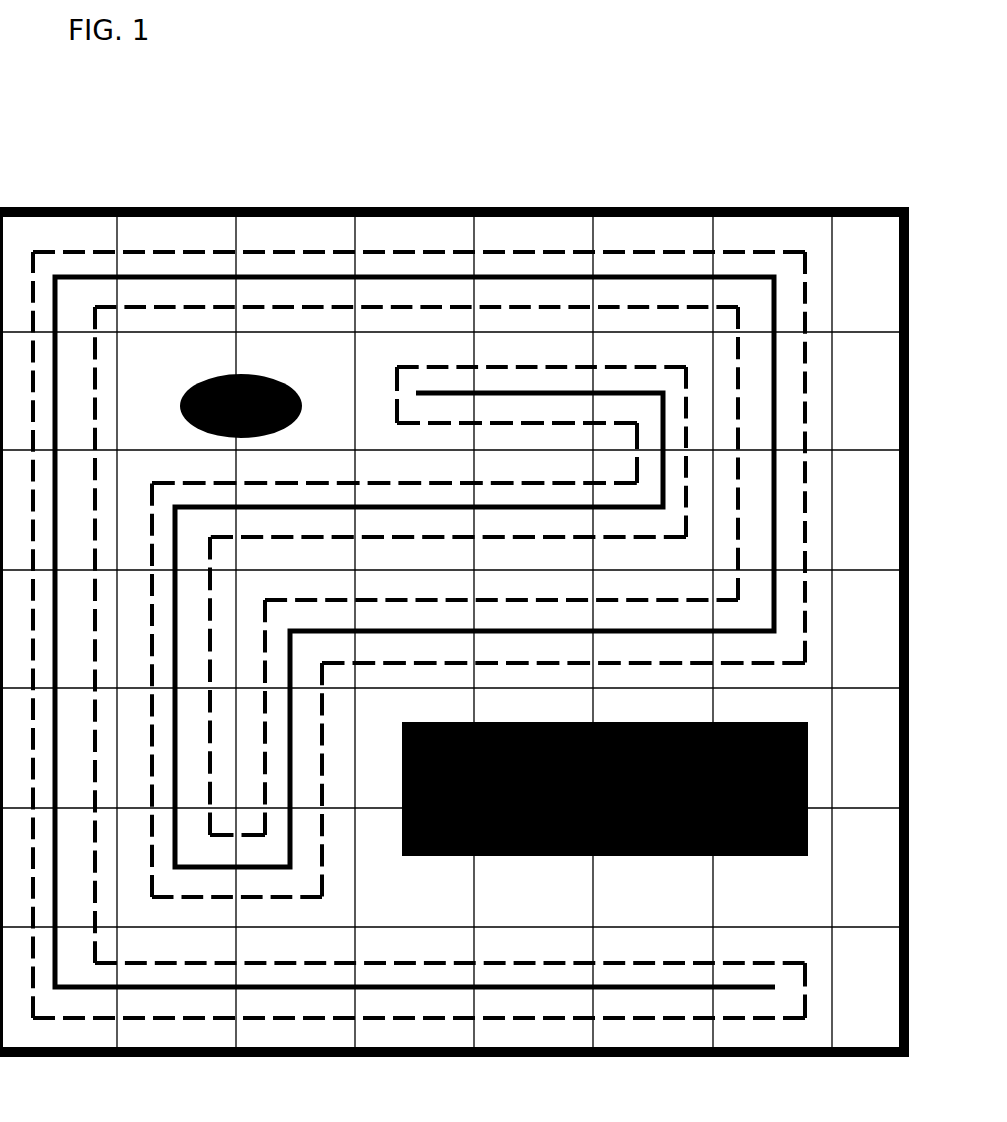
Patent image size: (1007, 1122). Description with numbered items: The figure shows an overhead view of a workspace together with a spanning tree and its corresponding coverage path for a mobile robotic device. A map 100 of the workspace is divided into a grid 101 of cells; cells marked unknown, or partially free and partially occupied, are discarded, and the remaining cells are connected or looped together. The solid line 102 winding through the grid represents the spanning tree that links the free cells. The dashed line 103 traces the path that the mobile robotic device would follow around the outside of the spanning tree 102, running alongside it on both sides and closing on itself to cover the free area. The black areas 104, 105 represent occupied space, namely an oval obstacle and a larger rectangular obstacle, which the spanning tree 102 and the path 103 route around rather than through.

The map 100 is at (169, 207).
The grid 101 is at (862, 332).
The spanning tree 102 is at (297, 277).
The path 103 is at (687, 252).
The occupied space 104 is at (241, 406).
The occupied space 105 is at (605, 789).